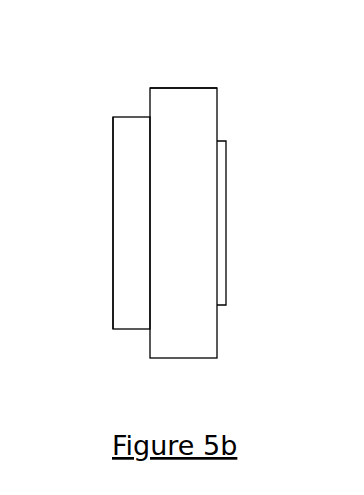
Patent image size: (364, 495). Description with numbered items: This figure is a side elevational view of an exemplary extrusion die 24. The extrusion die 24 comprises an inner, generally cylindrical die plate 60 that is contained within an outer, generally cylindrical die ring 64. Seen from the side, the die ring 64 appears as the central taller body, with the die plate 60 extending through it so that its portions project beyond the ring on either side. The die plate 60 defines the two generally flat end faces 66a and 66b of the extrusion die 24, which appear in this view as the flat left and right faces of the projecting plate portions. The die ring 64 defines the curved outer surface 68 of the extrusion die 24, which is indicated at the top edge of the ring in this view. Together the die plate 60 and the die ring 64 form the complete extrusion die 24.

The extrusion die 24 is at (246, 59).
The die plate 60 is at (120, 256).
The die ring 64 is at (198, 323).
The end face 66a is at (111, 152).
The end face 66b is at (229, 185).
The curved outer surface 68 is at (187, 86).